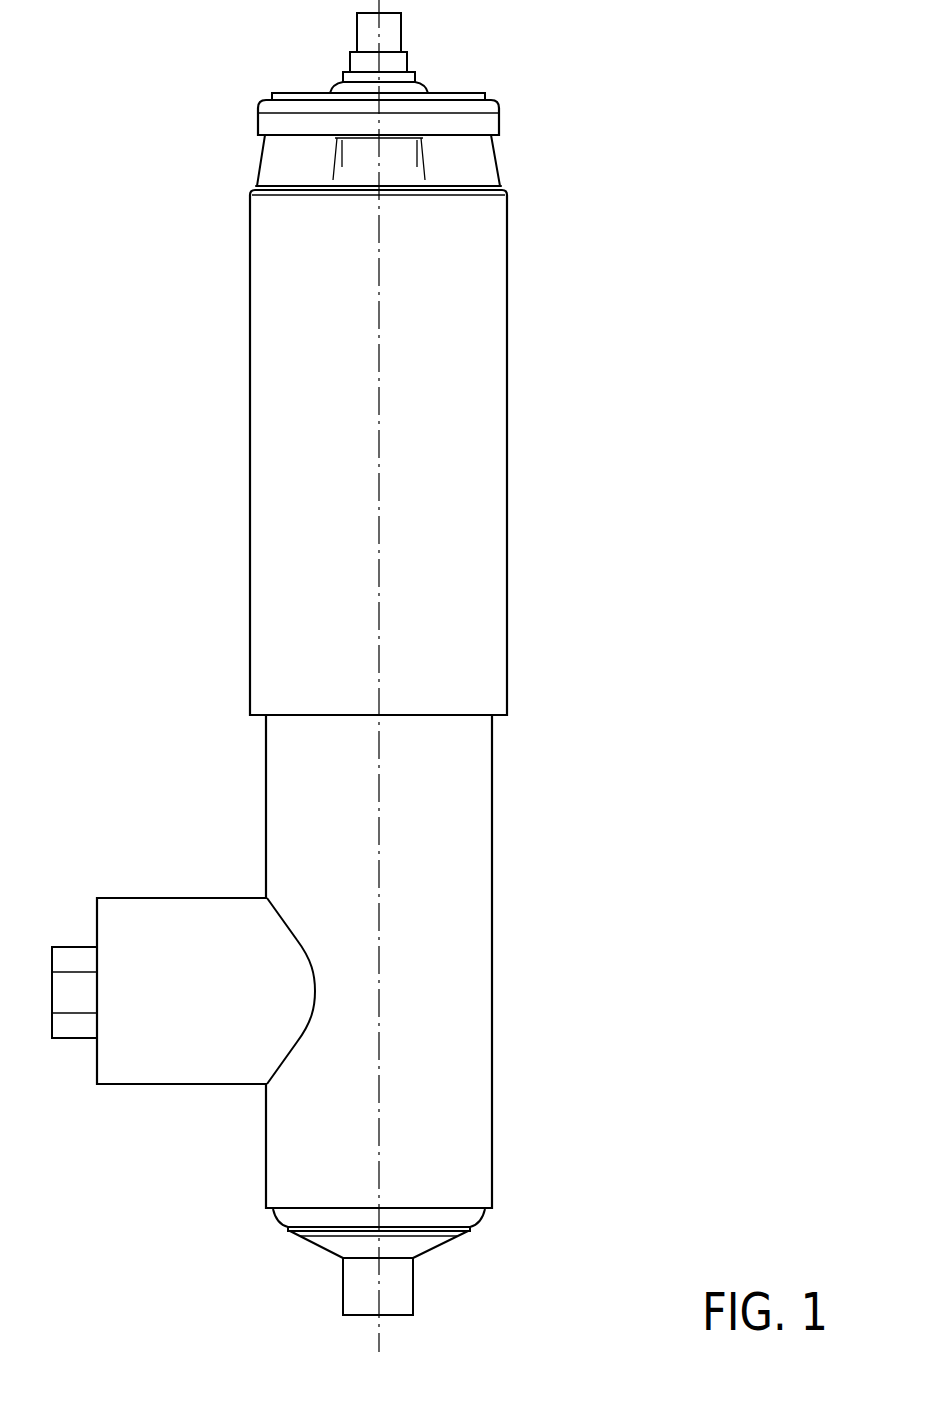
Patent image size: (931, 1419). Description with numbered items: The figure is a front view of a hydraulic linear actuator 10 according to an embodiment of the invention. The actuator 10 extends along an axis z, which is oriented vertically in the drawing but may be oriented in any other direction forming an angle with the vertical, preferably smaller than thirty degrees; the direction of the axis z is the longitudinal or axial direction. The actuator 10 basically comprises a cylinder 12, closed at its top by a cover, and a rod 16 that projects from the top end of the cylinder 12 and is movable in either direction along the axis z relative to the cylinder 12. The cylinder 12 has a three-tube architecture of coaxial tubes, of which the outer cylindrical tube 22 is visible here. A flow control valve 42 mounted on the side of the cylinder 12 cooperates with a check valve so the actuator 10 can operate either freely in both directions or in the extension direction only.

The hydraulic linear actuator 10 is at (341, 676).
The cylinder 12 is at (492, 810).
The rod 16 is at (401, 28).
The outer cylindrical tube 22 is at (492, 1004).
The flow control valve 42 is at (167, 897).
The axis z is at (379, 299).